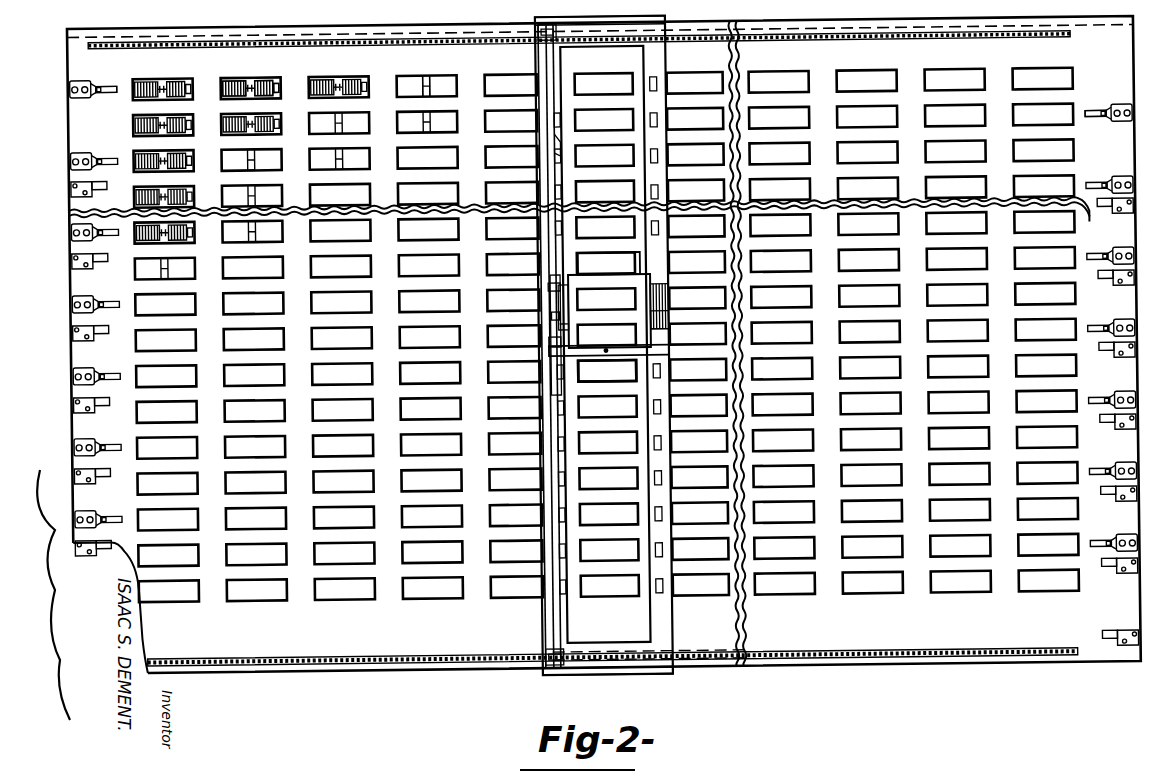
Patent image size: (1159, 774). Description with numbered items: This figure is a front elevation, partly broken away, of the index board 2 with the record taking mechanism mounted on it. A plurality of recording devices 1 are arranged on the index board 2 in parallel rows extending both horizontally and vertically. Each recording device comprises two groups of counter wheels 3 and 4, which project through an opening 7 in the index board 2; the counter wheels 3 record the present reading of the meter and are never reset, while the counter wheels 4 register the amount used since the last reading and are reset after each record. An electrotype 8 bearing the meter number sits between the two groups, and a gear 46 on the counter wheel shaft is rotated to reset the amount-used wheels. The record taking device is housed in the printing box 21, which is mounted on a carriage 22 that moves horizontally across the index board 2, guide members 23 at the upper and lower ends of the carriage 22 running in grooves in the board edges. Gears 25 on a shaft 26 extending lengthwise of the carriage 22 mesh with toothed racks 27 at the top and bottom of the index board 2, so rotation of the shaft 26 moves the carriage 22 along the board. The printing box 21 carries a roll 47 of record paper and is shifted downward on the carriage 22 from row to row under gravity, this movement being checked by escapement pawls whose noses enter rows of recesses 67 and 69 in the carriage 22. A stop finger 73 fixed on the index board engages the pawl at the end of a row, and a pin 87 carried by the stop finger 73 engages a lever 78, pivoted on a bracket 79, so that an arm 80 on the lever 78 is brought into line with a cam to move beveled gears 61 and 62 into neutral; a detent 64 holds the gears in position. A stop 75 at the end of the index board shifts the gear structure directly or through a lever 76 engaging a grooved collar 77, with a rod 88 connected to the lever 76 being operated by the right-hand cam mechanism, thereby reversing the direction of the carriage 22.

The recording device 1 is at (222, 128).
The index board 2 is at (604, 345).
The counter wheels 3 is at (240, 70).
The counter wheels 4 is at (270, 88).
The opening 7 is at (420, 68).
The electrotype 8 is at (428, 88).
The printing box 21 is at (609, 311).
The carriage 22 is at (658, 60).
The guide members 23 is at (540, 30).
The gears 25 is at (538, 42).
The shaft 26 is at (550, 70).
The toothed racks 27 is at (391, 42).
The gear 46 is at (280, 90).
The roll 47 is at (609, 265).
The beveled gear 61 is at (548, 326).
The beveled gear 62 is at (548, 352).
The detent 64 is at (560, 332).
The recess 67 is at (557, 124).
The recess 69 is at (556, 152).
The stop finger 73 is at (117, 88).
The stop 75 is at (98, 188).
The lever 76 is at (627, 368).
The grooved collar 77 is at (548, 362).
The lever 78 is at (548, 306).
The bracket 79 is at (656, 322).
The arm 80 is at (548, 300).
The pin 87 is at (101, 88).
The rod 88 is at (667, 337).